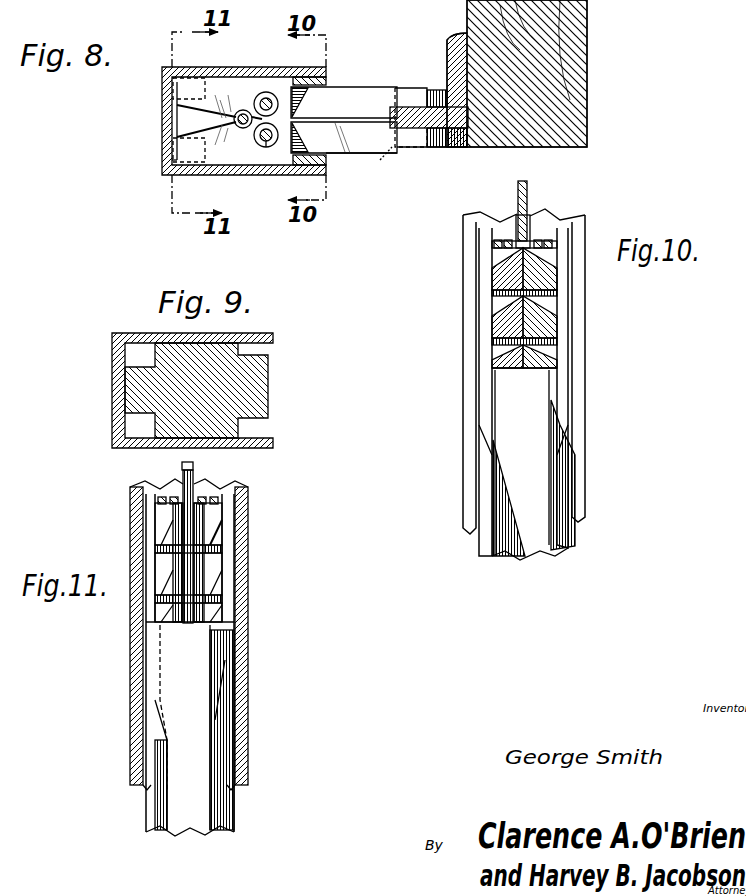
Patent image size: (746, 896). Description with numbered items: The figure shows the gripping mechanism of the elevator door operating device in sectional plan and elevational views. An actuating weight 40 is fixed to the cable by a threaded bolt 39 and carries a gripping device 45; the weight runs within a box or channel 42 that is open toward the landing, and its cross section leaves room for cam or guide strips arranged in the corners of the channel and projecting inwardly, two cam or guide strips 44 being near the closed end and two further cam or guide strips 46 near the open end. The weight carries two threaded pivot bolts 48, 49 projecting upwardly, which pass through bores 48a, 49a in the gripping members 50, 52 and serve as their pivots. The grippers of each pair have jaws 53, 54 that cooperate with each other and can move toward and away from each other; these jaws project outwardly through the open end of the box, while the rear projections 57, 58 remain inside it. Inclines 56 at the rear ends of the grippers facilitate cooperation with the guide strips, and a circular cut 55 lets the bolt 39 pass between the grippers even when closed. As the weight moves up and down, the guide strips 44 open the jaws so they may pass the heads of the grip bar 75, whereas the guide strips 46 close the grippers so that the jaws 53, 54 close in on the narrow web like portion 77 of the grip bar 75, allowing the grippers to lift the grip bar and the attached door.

In FIG. 8, the threaded bolt 39 is at (233, 119).
In FIG. 10, the threaded bolt 39 is at (528, 232).
In FIG. 11, the threaded bolt 39 is at (194, 476).
In FIG. 9, the actuating weight 40 is at (268, 395).
In FIG. 8, the box or channel 42 is at (244, 176).
In FIG. 9, the box or channel 42 is at (265, 447).
In FIG. 10, the box or channel 42 is at (548, 466).
In FIG. 11, the box or channel 42 is at (248, 656).
In FIG. 8, the cam or guide strips 44 is at (178, 160).
In FIG. 11, the cam or guide strips 44 is at (155, 752).
In FIG. 8, the gripping device 45 is at (380, 161).
In FIG. 8, the cam or guide strips 46 is at (330, 165).
In FIG. 10, the cam or guide strips 46 is at (568, 358).
In FIG. 11, the cam or guide strips 46 is at (234, 568).
In FIG. 8, the threaded pivot bolt 48 is at (265, 92).
In FIG. 8, the bore 48a is at (260, 118).
In FIG. 8, the threaded pivot bolt 49 is at (268, 148).
In FIG. 8, the bore 49a is at (261, 141).
In FIG. 8, the gripping member 50 is at (333, 92).
In FIG. 8, the gripping member 52 is at (345, 141).
In FIG. 10, the gripping member 52 is at (512, 308).
In FIG. 11, the gripping member 52 is at (160, 530).
In FIG. 8, the jaw 53 is at (410, 90).
In FIG. 8, the jaw 54 is at (420, 135).
In FIG. 8, the circular cut 55 is at (241, 111).
In FIG. 8, the inclines 56 is at (318, 105).
In FIG. 10, the inclines 56 is at (548, 318).
In FIG. 11, the inclines 56 is at (222, 536).
In FIG. 8, the rear projection 57 is at (188, 92).
In FIG. 8, the rear projection 58 is at (188, 145).
In FIG. 8, the grip bar 75 is at (432, 90).
In FIG. 8, the web like portion 77 is at (398, 137).